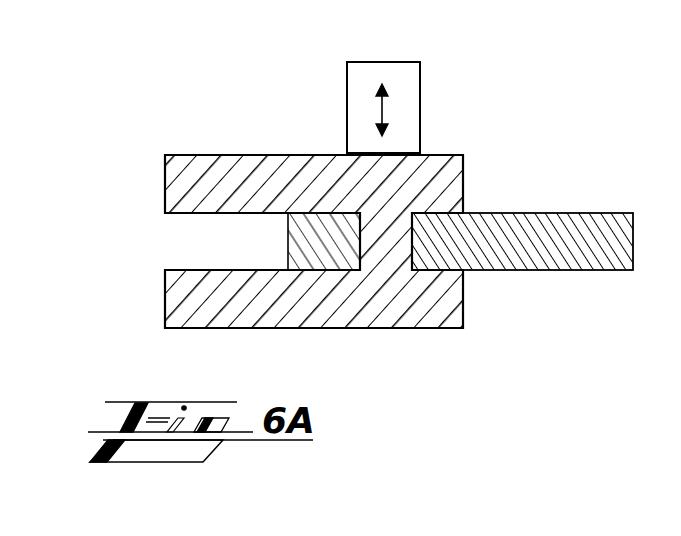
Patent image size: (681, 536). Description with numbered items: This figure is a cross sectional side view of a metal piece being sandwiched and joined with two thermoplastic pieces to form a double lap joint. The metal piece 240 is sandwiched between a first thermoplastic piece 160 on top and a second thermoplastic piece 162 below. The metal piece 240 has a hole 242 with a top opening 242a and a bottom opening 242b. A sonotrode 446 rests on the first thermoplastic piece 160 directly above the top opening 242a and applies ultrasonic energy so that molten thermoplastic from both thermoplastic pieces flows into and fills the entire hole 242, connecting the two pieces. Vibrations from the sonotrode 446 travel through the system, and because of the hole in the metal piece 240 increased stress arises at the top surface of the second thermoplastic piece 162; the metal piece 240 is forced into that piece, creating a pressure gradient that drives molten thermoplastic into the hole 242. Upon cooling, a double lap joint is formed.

The first thermoplastic piece 160 is at (465, 172).
The second thermoplastic piece 162 is at (465, 288).
The metal piece 240 is at (623, 234).
The hole 242 is at (386, 235).
The top opening 242a is at (378, 205).
The bottom opening 242b is at (390, 269).
The sonotrode 446 is at (420, 87).